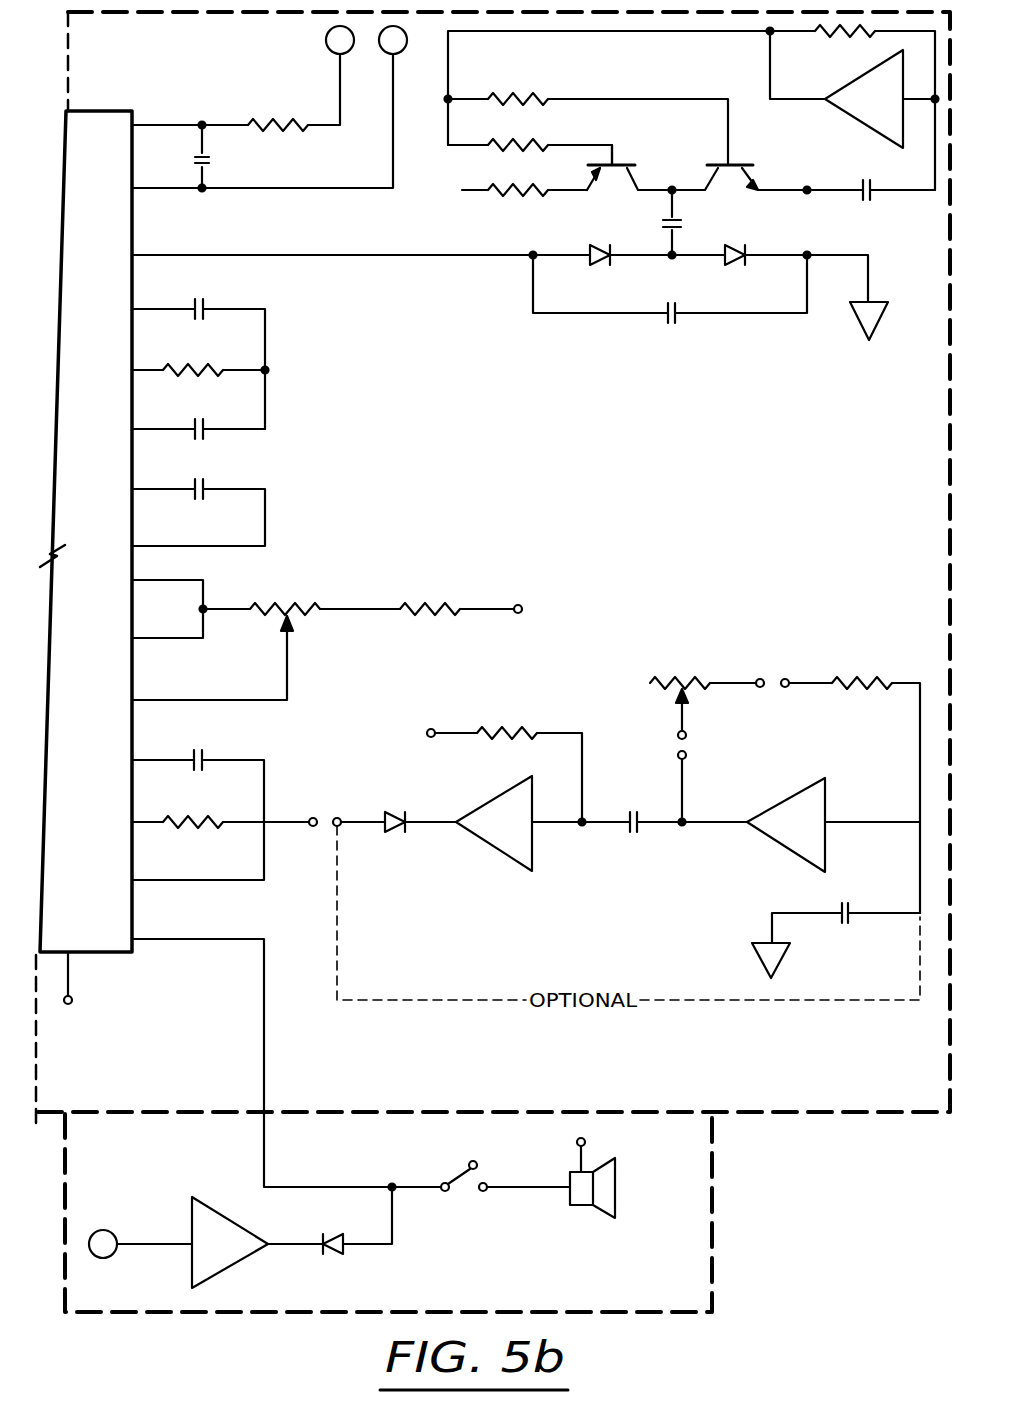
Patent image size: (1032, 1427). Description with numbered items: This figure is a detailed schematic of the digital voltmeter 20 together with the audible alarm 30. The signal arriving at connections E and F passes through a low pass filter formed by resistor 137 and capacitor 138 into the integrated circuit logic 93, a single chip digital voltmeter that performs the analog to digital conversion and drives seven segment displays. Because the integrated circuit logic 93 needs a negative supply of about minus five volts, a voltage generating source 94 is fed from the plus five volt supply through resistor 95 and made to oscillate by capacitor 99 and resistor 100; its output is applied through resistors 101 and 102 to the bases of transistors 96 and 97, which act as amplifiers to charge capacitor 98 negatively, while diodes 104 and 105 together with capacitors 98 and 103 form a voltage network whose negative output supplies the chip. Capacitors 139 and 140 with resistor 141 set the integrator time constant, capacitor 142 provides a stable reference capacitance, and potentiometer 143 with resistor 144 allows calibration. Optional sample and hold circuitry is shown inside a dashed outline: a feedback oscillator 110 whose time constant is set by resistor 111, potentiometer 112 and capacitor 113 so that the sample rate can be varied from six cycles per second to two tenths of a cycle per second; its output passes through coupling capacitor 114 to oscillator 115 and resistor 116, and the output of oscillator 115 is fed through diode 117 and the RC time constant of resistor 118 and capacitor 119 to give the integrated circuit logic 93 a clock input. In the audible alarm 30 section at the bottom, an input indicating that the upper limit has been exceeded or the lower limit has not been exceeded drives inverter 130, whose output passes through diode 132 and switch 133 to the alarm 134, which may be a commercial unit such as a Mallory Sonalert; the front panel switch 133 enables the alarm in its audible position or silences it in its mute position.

The digital voltmeter 20 is at (585, 534).
The audible alarm 30 is at (499, 1262).
The integrated circuit logic 93 is at (75, 701).
The voltage generating source 94 is at (853, 122).
The resistor 95 is at (518, 184).
The transistor 96 is at (615, 162).
The transistor 97 is at (731, 162).
The capacitor 98 is at (680, 221).
The capacitor 99 is at (874, 196).
The resistor 100 is at (845, 37).
The resistor 101 is at (518, 139).
The resistor 102 is at (518, 93).
The capacitor 103 is at (678, 308).
The diode 104 is at (600, 245).
The diode 105 is at (745, 245).
The feedback oscillator 110 is at (770, 842).
The resistor 111 is at (861, 677).
The potentiometer 112 is at (680, 678).
The capacitor 113 is at (852, 920).
The coupling capacitor 114 is at (632, 832).
The oscillator 115 is at (489, 840).
The resistor 116 is at (505, 728).
The diode 117 is at (390, 816).
The resistor 118 is at (194, 835).
The capacitor 119 is at (202, 757).
The inverter 130 is at (236, 1263).
The diode 132 is at (333, 1236).
The switch 133 is at (456, 1178).
The alarm 134 is at (615, 1187).
The resistor 137 is at (243, 78).
The capacitor 138 is at (209, 159).
The capacitor 139 is at (206, 306).
The capacitor 140 is at (206, 426).
The resistor 141 is at (197, 364).
The capacitor 142 is at (206, 486).
The potentiometer 143 is at (285, 607).
The resistor 144 is at (487, 599).